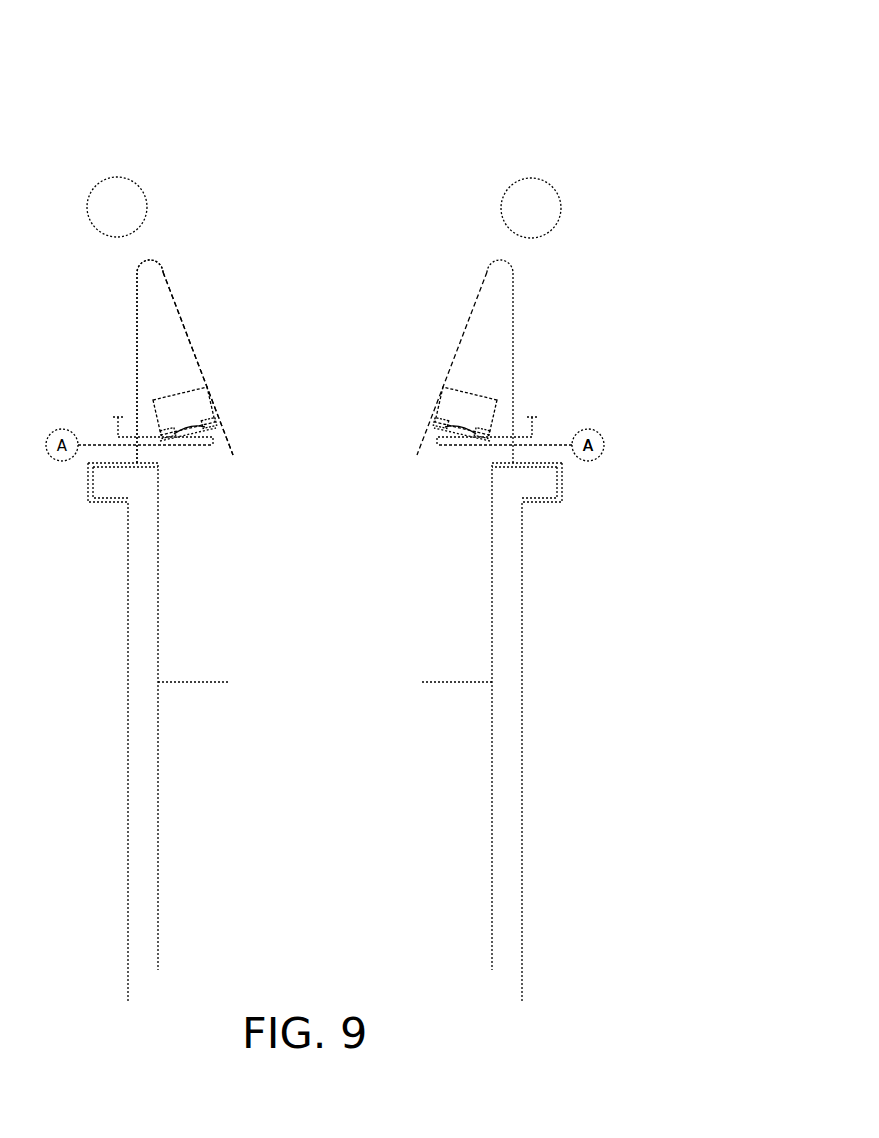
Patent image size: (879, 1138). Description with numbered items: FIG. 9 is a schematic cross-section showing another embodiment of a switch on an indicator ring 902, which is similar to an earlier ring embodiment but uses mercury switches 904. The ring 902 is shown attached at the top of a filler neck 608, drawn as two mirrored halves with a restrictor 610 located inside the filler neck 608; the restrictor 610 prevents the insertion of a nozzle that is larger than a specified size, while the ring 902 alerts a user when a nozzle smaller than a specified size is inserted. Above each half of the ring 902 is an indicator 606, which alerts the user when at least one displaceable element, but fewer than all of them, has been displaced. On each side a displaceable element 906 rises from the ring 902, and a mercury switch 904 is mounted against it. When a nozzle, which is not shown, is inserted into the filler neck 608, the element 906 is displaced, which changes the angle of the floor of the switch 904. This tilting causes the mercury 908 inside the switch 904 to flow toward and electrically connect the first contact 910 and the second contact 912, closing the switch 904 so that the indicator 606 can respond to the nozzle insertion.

The ring 902 is at (630, 87).
The indicators 606 is at (135, 182).
The filler neck 608 is at (523, 555).
The restrictor 610 is at (198, 680).
The mercury switch 904 is at (192, 385).
The element 906 is at (192, 340).
The mercury 908 is at (182, 433).
The first contact 910 is at (167, 442).
The second contact 912 is at (215, 410).